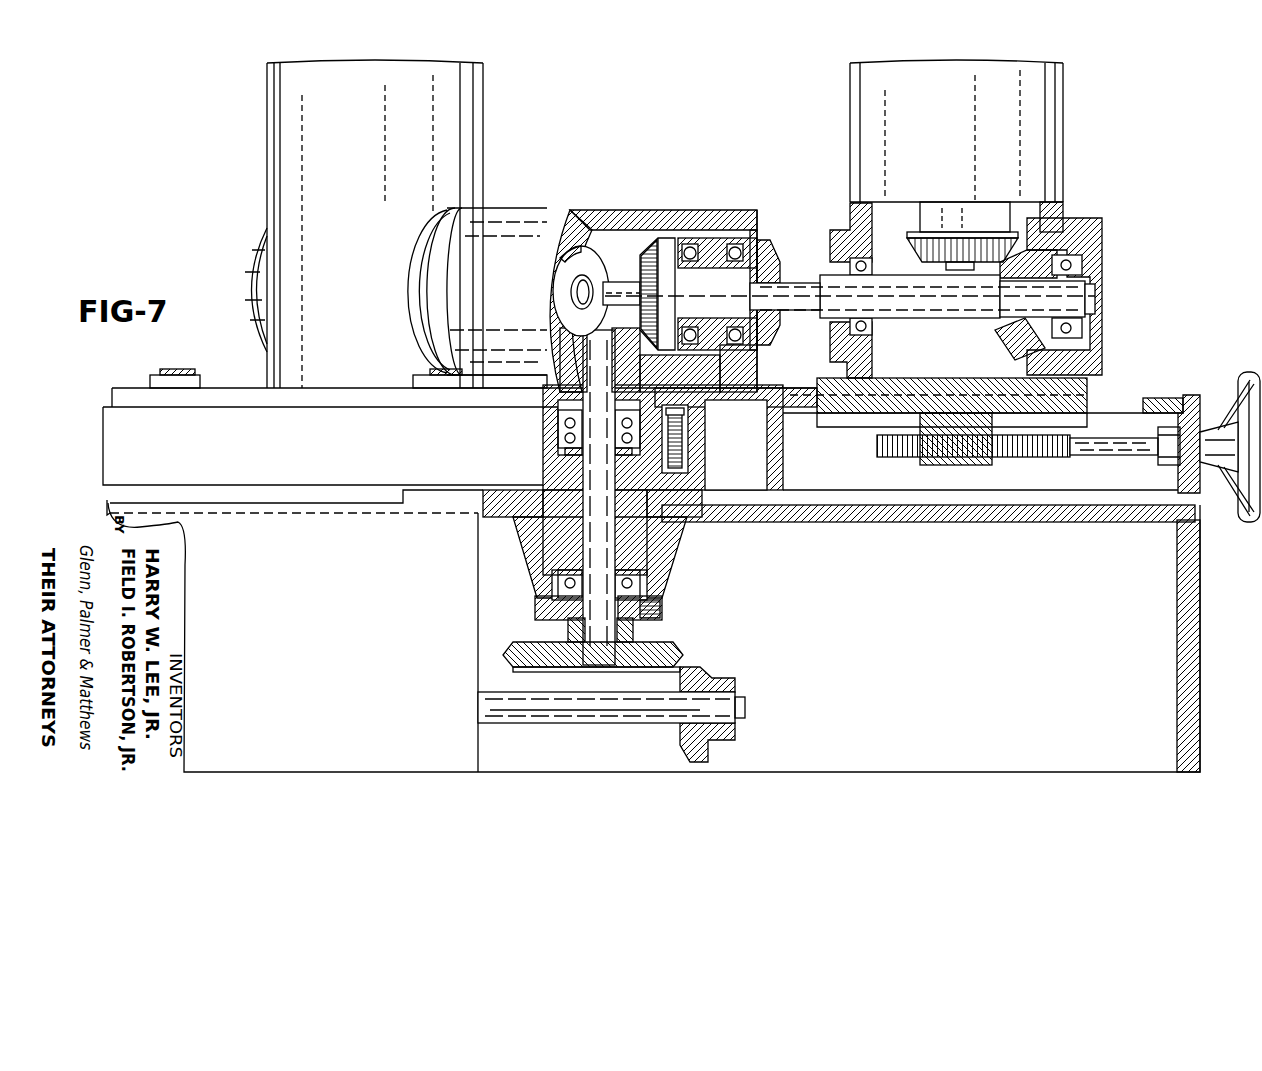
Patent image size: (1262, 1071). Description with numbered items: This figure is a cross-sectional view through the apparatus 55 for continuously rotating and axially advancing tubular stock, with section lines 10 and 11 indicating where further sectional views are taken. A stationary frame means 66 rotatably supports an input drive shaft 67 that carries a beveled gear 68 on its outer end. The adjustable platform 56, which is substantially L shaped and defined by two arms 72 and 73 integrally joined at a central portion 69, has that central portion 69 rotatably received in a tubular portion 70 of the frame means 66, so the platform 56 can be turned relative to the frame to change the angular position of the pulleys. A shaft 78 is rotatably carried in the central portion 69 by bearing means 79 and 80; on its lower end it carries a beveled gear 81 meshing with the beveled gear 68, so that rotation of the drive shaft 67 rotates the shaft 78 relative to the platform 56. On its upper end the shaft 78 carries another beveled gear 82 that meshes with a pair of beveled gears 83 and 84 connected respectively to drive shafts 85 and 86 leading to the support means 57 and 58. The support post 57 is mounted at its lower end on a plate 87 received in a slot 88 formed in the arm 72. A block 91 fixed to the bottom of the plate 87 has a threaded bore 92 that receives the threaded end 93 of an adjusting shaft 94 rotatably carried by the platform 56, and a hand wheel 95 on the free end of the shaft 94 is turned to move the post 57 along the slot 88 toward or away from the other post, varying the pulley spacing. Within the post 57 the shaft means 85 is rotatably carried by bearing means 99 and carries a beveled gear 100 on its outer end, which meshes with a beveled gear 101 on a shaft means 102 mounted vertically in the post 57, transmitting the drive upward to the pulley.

The section line 10- 10 is at (985, 150).
The section line 11- 11 is at (432, 293).
The apparatus 55 is at (733, 178).
The adjustable platform 56 is at (223, 407).
The support means 57 is at (1063, 150).
The support means 58 is at (267, 118).
The stationary frame means 66 is at (1185, 588).
The input drive shaft 67 is at (610, 712).
The beveled gear 68 is at (700, 678).
The central portion 69 is at (640, 532).
The tubular portion 70 is at (670, 565).
The arm 72 is at (1185, 395).
The arm 73 is at (335, 388).
The shaft 78 is at (595, 488).
The bearing means 79 is at (562, 438).
The bearing means 80 is at (632, 585).
The beveled gear 81 is at (672, 652).
The beveled gear 82 is at (640, 360).
The beveled gear 83 is at (650, 248).
The beveled gear 84 is at (580, 262).
The drive shaft 85 is at (622, 284).
The drive shaft 86 is at (580, 294).
The plate 87 is at (940, 390).
The slot 88 is at (1140, 400).
The block 91 is at (975, 462).
The threaded bore 92 is at (940, 458).
The threaded end 93 is at (1040, 458).
The adjusting shaft 94 is at (1150, 460).
The hand wheel 95 is at (1248, 374).
The bearing means 99 is at (862, 260).
The beveled gear 100 is at (1005, 342).
The beveled gear 101 is at (985, 234).
The shaft means 102 is at (962, 270).